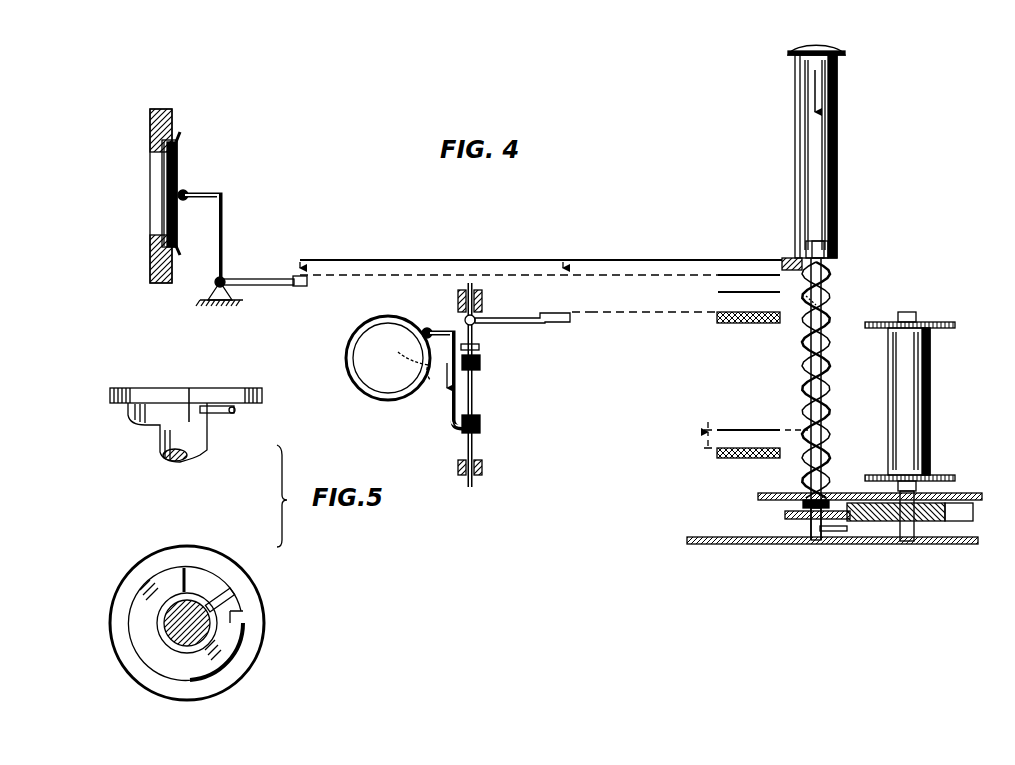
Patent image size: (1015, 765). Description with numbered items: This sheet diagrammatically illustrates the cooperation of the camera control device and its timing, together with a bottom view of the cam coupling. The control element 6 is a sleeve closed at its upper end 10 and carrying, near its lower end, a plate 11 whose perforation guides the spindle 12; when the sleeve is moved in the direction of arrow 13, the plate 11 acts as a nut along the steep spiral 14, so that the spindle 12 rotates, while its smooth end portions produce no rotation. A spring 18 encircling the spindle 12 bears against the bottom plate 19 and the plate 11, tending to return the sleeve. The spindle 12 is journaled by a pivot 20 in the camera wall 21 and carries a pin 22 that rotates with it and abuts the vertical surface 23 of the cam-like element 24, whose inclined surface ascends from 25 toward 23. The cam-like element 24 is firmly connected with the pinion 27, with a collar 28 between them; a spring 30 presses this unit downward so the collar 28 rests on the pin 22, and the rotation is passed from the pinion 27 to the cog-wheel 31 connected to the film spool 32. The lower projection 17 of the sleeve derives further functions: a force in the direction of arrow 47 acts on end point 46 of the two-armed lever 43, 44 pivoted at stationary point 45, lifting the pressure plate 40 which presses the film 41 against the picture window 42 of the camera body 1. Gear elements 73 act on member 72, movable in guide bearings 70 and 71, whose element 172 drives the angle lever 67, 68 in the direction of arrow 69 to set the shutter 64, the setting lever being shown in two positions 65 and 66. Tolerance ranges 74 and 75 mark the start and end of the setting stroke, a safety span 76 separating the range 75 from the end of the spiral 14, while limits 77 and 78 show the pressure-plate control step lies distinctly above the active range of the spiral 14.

In FIG. 4, the camera body 1 is at (172, 118).
In FIG. 4, the control element 6 is at (837, 155).
In FIG. 4, the upper end 10 is at (835, 47).
In FIG. 4, the plate 11 is at (837, 248).
In FIG. 4, the spindle 12 is at (823, 280).
In FIG. 5, the spindle 12 is at (180, 462).
In FIG. 4, the arrow 13 is at (818, 90).
In FIG. 4, the steep spiral 14 is at (828, 365).
In FIG. 4, the projection 17 is at (784, 256).
In FIG. 4, the spring 18 is at (804, 364).
In FIG. 4, the bottom plate 19 is at (838, 492).
In FIG. 4, the pivot 20 is at (816, 540).
In FIG. 4, the camera wall 21 is at (725, 545).
In FIG. 4, the pin 22 is at (845, 530).
In FIG. 5, the pin 22 is at (234, 412).
In FIG. 5, the vertical surface 23 is at (190, 388).
In FIG. 5, the cam-like element 24 is at (153, 418).
In FIG. 5, the start of inclined surface 25 is at (248, 615).
In FIG. 4, the pinion 27 is at (800, 519).
In FIG. 5, the collar 28 is at (110, 396).
In FIG. 4, the spring 30 is at (803, 504).
In FIG. 4, the cog-wheel 31 is at (973, 512).
In FIG. 4, the film spool 32 is at (920, 390).
In FIG. 4, the pressure plate 40 is at (178, 160).
In FIG. 4, the film 41 is at (170, 216).
In FIG. 4, the picture window 42 is at (165, 188).
In FIG. 4, the lever arm 43 is at (222, 215).
In FIG. 4, the lever arm 44 is at (262, 278).
In FIG. 4, the stationary point 45 is at (212, 286).
In FIG. 4, the end point 46 is at (300, 286).
In FIG. 4, the arrow 47 is at (302, 258).
In FIG. 4, the shutter 64 is at (372, 377).
In FIG. 4, the setting lever 65 is at (424, 328).
In FIG. 4, the setting lever 66 is at (410, 362).
In FIG. 4, the angle lever arm 67 is at (453, 328).
In FIG. 4, the angle lever arm 68 is at (455, 425).
In FIG. 4, the arrow 69 is at (431, 387).
In FIG. 4, the guide bearing 70 is at (482, 298).
In FIG. 4, the guide bearing 71 is at (482, 466).
In FIG. 4, the member 72 is at (474, 403).
In FIG. 4, the gear elements 73 is at (545, 326).
In FIG. 4, the tolerance range 74 is at (716, 318).
In FIG. 4, the tolerance range 75 is at (730, 460).
In FIG. 4, the safety span 76 is at (700, 440).
In FIG. 4, the control range limit 77 is at (722, 273).
In FIG. 4, the control range limit 78 is at (716, 291).
In FIG. 4, the element 172 is at (479, 347).